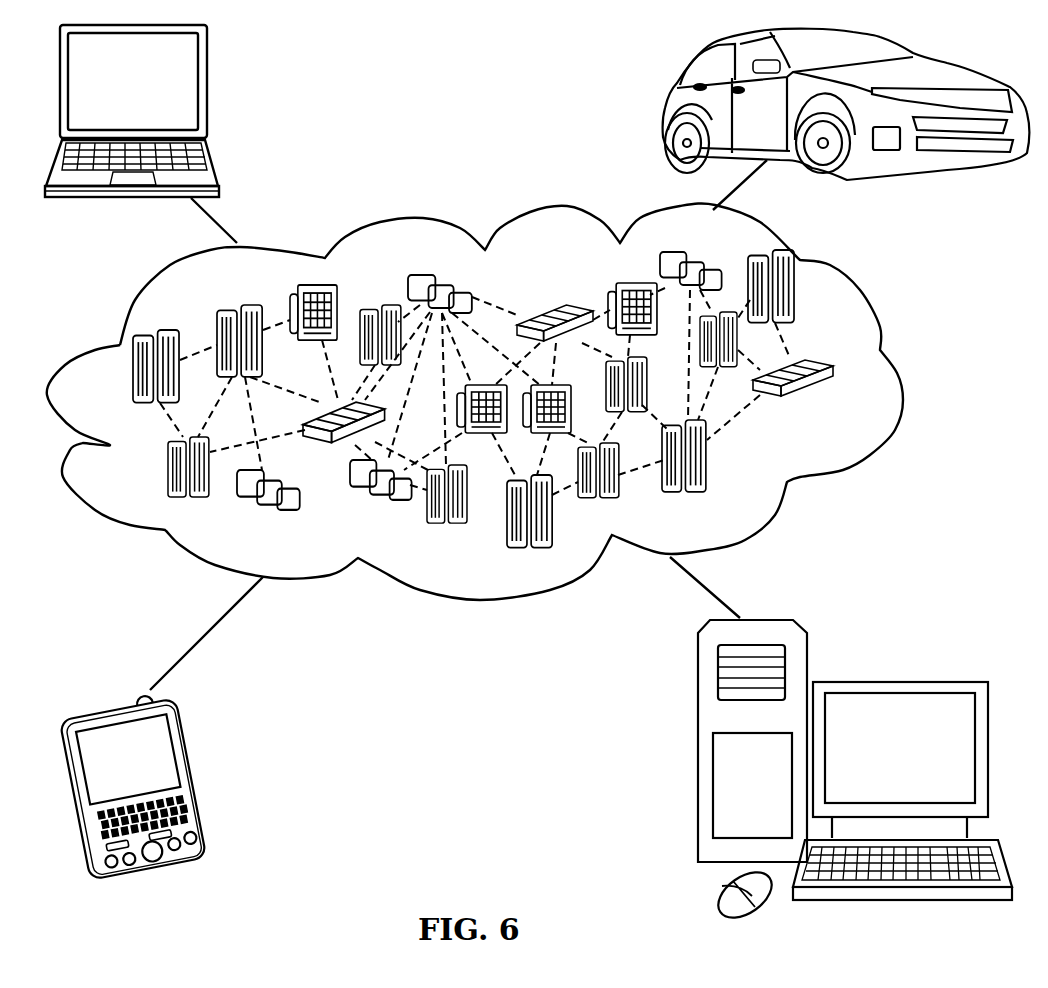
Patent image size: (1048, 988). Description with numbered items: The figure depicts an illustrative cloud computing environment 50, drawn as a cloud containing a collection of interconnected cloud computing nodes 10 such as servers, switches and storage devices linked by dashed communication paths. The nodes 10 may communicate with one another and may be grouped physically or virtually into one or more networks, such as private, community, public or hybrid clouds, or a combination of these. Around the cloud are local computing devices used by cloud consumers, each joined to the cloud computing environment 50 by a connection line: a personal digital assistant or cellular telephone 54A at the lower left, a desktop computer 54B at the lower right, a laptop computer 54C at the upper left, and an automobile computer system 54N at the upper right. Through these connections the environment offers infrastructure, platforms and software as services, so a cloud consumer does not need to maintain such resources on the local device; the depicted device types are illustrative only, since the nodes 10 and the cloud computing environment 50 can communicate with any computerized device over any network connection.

The laptop computer 54C is at (207, 89).
The automobile computer system 54N is at (670, 107).
The personal digital assistant or cellular telephone 54A is at (195, 778).
The desktop computer 54B is at (897, 680).
The cloud computing environment 50 is at (897, 373).
The cloud computing node 10 is at (845, 412).